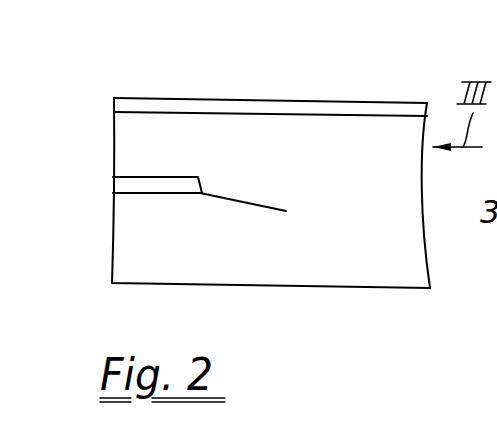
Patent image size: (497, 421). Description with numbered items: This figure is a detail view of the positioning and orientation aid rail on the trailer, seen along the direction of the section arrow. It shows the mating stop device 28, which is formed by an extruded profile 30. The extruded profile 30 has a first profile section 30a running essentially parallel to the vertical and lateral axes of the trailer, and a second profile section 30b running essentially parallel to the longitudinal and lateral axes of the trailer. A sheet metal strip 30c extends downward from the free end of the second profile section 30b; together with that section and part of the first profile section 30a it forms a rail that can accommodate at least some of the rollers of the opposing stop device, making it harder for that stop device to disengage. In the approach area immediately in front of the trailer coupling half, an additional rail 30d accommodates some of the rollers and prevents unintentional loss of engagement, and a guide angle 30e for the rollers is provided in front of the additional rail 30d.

The mating stop device 28 is at (217, 98).
The extruded profile 30 is at (410, 273).
The first profile section 30a is at (352, 220).
The second profile section 30b is at (343, 101).
The sheet metal strip 30c is at (267, 110).
The additional rail 30d is at (151, 191).
The guide angle 30e is at (238, 203).